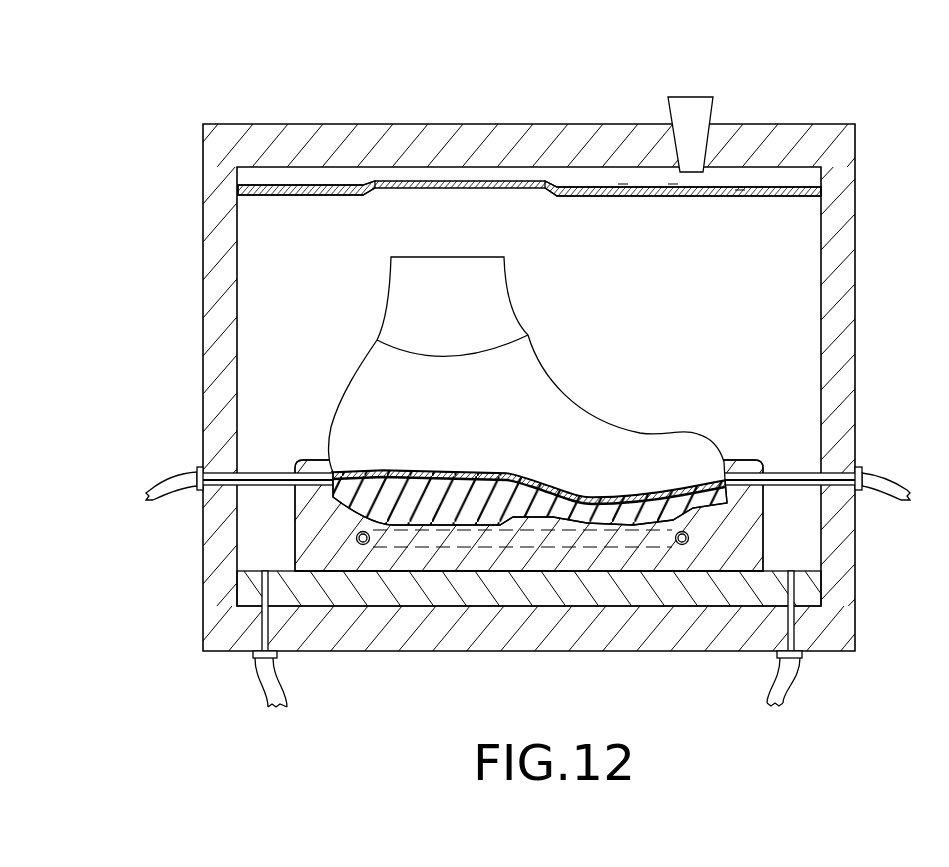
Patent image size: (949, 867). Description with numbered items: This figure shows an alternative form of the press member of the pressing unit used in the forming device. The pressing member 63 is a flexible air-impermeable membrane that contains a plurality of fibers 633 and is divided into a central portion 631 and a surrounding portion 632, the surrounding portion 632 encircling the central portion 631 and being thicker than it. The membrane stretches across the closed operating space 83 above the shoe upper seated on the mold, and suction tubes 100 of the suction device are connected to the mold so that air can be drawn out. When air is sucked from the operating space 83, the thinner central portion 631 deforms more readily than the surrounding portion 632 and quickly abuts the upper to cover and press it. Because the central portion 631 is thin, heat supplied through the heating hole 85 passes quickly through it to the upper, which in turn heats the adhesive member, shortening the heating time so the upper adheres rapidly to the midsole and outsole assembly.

The pressing member 63 is at (562, 99).
The central portion 631 is at (402, 183).
The surrounding portion 632 is at (770, 193).
The fibers 633 is at (740, 190).
The heating hole 85 is at (693, 127).
The operating space 83 is at (288, 373).
The suction tubes 100 is at (887, 500).